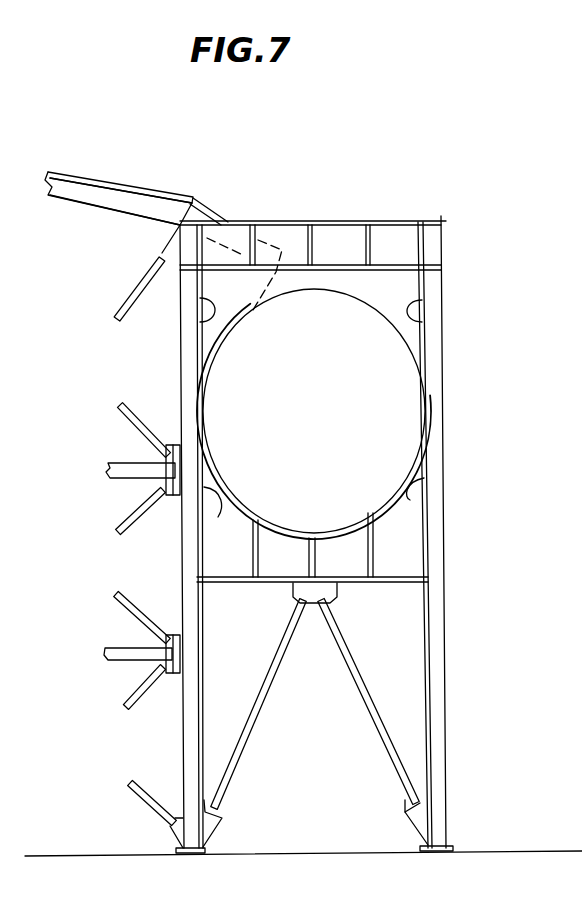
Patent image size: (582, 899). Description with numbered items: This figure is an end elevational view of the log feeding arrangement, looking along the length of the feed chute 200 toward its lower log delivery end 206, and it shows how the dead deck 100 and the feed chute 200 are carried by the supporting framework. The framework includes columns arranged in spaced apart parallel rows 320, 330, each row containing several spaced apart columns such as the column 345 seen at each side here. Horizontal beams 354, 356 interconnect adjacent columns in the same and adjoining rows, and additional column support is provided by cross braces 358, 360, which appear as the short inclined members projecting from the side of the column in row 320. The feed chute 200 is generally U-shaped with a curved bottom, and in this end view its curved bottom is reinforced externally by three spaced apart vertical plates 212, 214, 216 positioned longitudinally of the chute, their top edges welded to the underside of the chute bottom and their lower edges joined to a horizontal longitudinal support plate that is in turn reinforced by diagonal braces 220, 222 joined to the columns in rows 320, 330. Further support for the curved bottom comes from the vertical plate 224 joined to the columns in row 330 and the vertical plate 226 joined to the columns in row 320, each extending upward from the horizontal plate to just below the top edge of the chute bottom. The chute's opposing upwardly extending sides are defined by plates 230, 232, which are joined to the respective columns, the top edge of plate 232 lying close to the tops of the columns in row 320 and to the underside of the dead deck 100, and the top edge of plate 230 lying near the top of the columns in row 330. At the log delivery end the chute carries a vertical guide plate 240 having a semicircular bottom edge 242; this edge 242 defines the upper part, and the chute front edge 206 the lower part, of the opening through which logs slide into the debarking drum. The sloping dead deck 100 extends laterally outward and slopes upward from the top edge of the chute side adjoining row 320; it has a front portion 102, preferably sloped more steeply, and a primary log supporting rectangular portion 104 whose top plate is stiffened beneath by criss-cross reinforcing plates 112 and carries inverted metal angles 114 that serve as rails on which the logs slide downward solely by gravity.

The dead deck 100 is at (188, 175).
The front portion 102 is at (217, 208).
The primary log supporting rectangular portion 104 is at (78, 163).
The criss-cross reinforcing plates 112 is at (77, 195).
The inverted metal angles 114 is at (132, 188).
The feed chute 200 is at (373, 473).
The lower log delivery end 206 is at (282, 525).
The vertical plate 212 is at (252, 542).
The vertical plate 214 is at (315, 553).
The vertical plate 216 is at (372, 522).
The diagonal brace 220 is at (238, 753).
The diagonal brace 222 is at (390, 750).
The vertical plate 224 is at (442, 497).
The vertical plate 226 is at (228, 512).
The side plate 230 is at (441, 300).
The side plate 232 is at (200, 300).
The vertical guide plate 240 is at (398, 297).
The semicircular bottom edge 242 is at (337, 297).
The row of columns 320 is at (180, 731).
The row of columns 330 is at (453, 648).
The column 345 is at (195, 675).
The horizontal beam 354 is at (112, 650).
The horizontal beam 356 is at (112, 465).
The cross brace 358 is at (137, 291).
The cross brace 360 is at (127, 405).